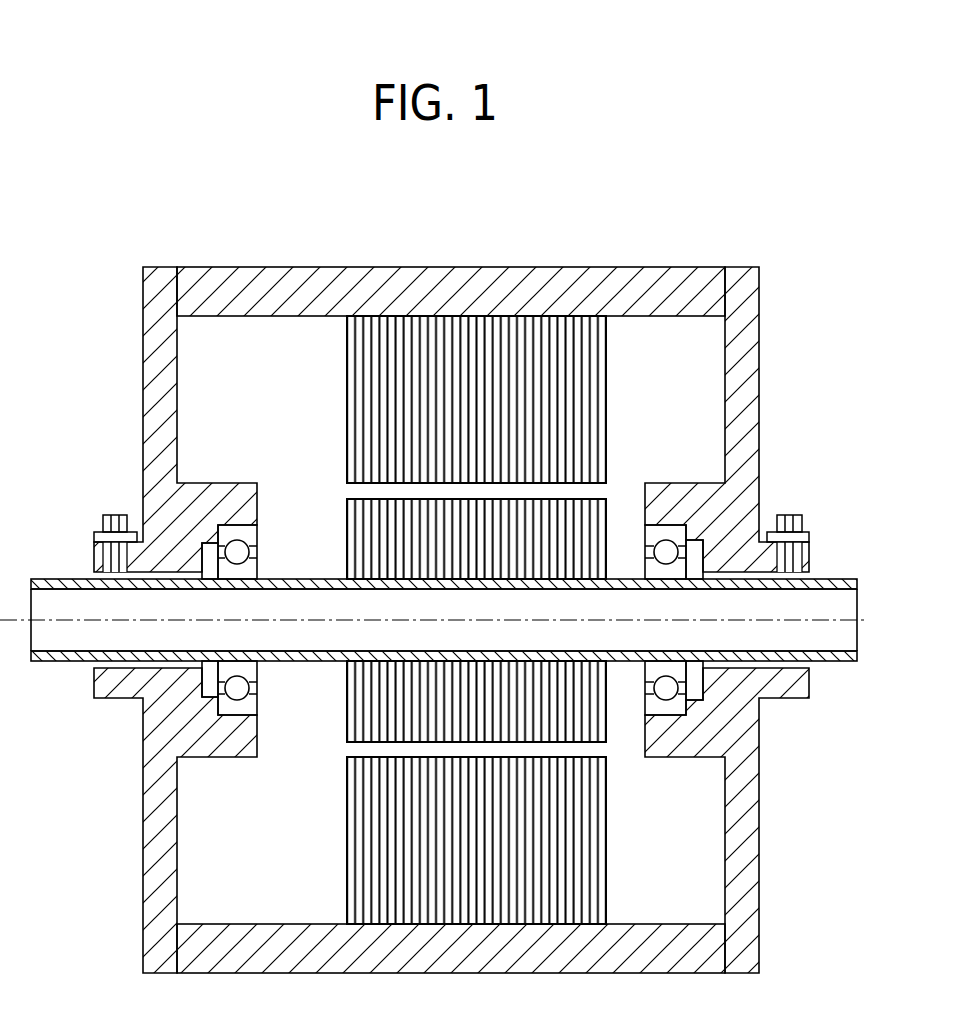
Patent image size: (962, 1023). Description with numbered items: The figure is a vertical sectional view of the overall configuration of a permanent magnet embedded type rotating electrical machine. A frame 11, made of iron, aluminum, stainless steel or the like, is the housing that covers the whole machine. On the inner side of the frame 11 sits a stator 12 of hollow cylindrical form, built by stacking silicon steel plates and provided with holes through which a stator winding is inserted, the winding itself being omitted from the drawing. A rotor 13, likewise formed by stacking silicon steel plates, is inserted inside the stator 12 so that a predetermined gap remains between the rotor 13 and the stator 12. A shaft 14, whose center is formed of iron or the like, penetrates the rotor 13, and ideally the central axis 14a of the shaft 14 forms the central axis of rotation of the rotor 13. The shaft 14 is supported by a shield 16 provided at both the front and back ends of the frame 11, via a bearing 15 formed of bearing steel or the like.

The frame 11 is at (633, 267).
The stator 12 is at (607, 366).
The rotor 13 is at (607, 512).
The shaft 14 is at (444, 591).
The central axis 14a is at (73, 620).
The bearing 15 is at (257, 530).
The shield 16 is at (143, 384).